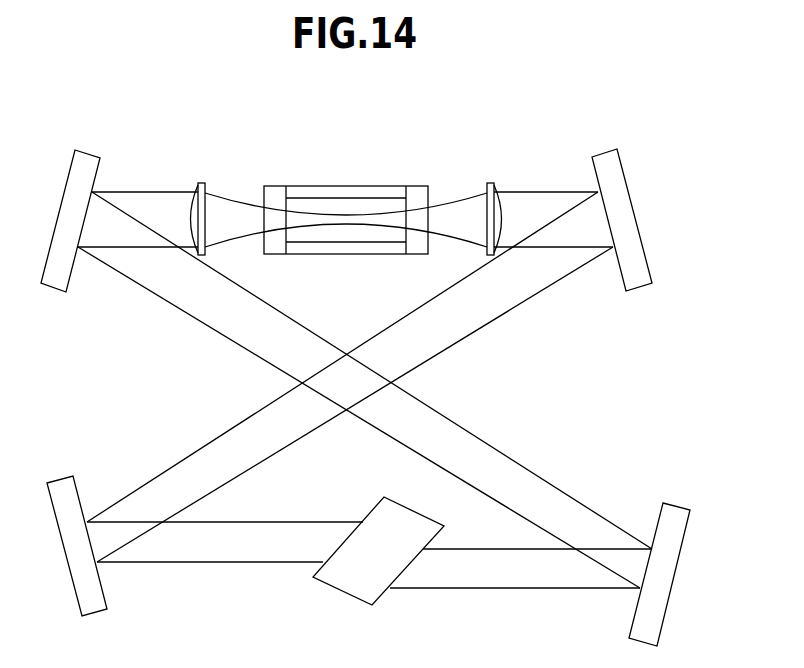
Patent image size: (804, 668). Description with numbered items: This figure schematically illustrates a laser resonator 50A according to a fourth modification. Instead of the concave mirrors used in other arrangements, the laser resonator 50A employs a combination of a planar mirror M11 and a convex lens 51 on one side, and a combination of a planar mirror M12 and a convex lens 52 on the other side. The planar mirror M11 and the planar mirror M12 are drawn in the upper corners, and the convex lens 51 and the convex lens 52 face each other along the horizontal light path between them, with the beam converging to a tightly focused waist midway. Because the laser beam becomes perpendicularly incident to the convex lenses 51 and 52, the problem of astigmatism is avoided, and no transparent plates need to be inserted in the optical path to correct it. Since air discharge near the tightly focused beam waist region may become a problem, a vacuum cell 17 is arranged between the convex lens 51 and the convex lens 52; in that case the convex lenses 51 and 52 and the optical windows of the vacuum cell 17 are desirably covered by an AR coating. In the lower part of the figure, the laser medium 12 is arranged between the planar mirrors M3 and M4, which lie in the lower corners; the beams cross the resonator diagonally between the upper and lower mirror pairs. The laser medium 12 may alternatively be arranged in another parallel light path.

The laser resonator 50A is at (362, 130).
The vacuum cell 17 is at (373, 186).
The convex lens 51 is at (498, 182).
The convex lens 52 is at (197, 185).
The laser medium 12 is at (383, 498).
The planar mirror M3 is at (678, 504).
The planar mirror M4 is at (59, 478).
The planar mirror M11 is at (642, 291).
The planar mirror M12 is at (51, 292).